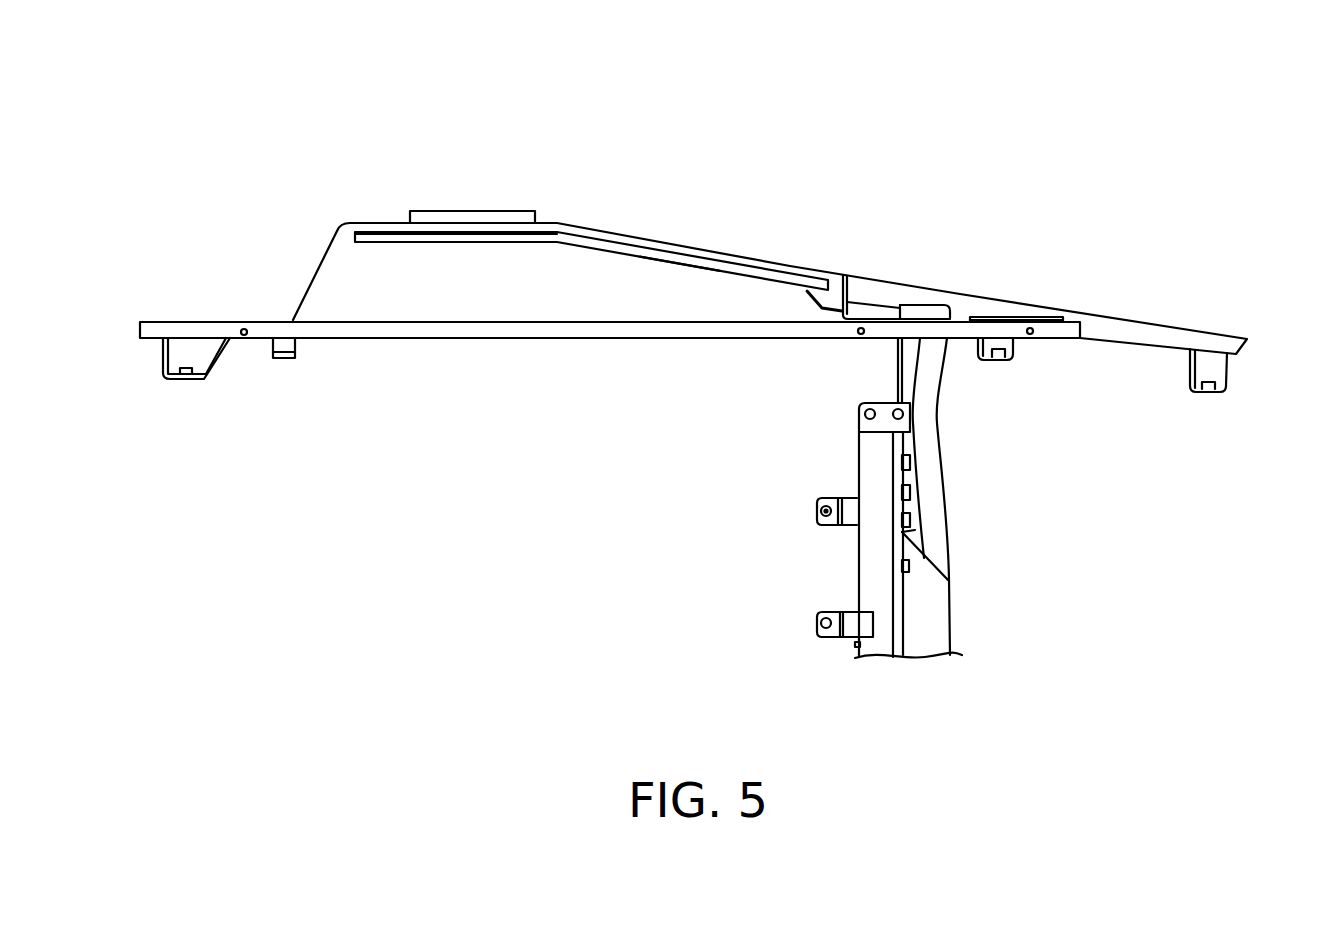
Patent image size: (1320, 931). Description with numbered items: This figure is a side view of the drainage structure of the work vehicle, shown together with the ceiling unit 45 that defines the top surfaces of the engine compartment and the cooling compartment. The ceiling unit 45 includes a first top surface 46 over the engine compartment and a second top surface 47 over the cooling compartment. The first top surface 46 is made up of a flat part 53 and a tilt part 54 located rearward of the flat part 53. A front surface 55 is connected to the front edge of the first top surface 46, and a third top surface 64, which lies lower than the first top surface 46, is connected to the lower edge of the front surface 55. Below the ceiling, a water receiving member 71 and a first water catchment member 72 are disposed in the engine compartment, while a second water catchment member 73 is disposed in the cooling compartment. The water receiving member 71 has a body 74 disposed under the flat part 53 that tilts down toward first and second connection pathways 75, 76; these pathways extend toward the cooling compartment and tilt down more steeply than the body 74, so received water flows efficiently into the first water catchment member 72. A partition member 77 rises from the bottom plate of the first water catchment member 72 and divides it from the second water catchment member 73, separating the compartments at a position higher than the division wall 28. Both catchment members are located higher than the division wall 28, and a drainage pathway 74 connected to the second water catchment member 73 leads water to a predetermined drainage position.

The division wall 28 is at (897, 387).
The ceiling unit 45 is at (710, 146).
The first top surface 46 is at (573, 198).
The second top surface 47 is at (985, 271).
The flat part 53 is at (494, 211).
The tilt part 54 is at (742, 253).
The front surface 55 is at (315, 273).
The third top surface 64 is at (193, 318).
The water receiving member 71 is at (525, 271).
The first water catchment member 72 is at (808, 291).
The second water catchment member 73 is at (897, 296).
The drainage pathway 74 is at (427, 240).
The first connection pathway 75 is at (642, 329).
The second connection pathway 76 is at (677, 267).
The partition member 77 is at (861, 281).